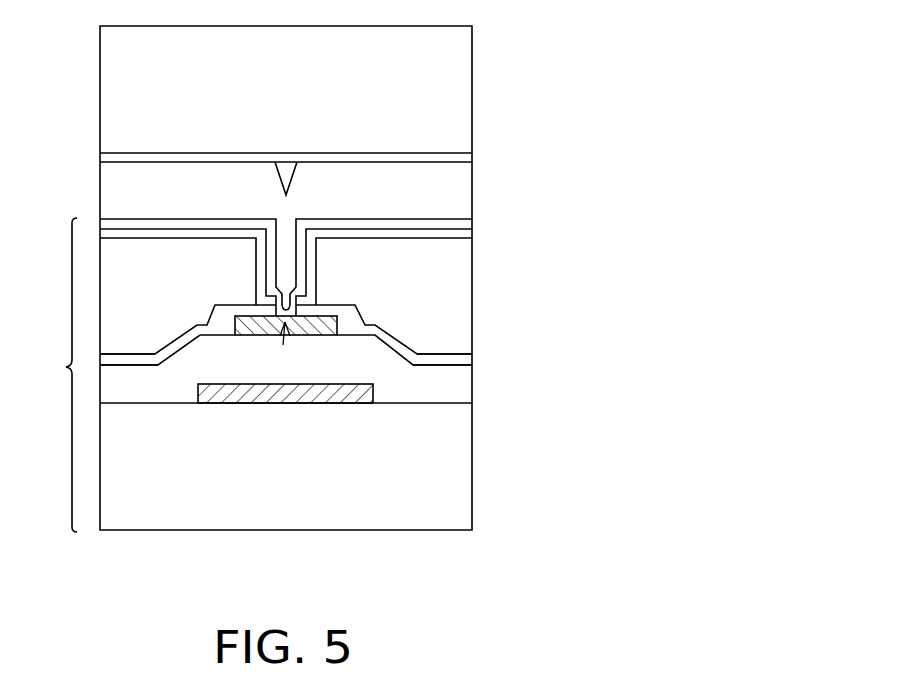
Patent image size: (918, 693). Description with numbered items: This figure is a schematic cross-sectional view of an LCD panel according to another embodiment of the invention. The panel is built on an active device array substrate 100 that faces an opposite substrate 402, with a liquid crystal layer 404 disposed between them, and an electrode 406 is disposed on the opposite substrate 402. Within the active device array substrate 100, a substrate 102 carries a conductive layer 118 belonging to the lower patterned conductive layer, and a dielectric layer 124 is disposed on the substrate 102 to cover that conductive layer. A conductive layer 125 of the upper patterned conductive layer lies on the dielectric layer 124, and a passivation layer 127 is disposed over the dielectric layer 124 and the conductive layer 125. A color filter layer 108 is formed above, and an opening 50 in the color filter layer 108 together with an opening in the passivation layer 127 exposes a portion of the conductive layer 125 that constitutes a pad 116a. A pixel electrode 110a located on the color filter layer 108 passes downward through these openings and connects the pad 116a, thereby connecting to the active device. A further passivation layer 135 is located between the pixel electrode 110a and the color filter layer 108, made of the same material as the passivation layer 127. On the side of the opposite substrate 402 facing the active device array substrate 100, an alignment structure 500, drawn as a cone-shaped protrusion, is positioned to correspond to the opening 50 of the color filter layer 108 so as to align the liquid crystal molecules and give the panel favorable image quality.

The opposite substrate 402 is at (430, 95).
The electrode 406 is at (452, 157).
The liquid crystal layer 404 is at (442, 190).
The alignment structure 500 is at (284, 177).
The pixel electrode 110a is at (455, 223).
The passivation layer 135 is at (453, 233).
The opening 50 is at (314, 270).
The color filter layer 108 is at (417, 313).
The passivation layer 127 is at (457, 360).
The conductive layer 125 is at (262, 328).
The pad 116a is at (283, 345).
The dielectric layer 124 is at (442, 384).
The conductive layer 118 is at (337, 393).
The substrate 102 is at (442, 467).
The active device array substrate 100 is at (46, 375).